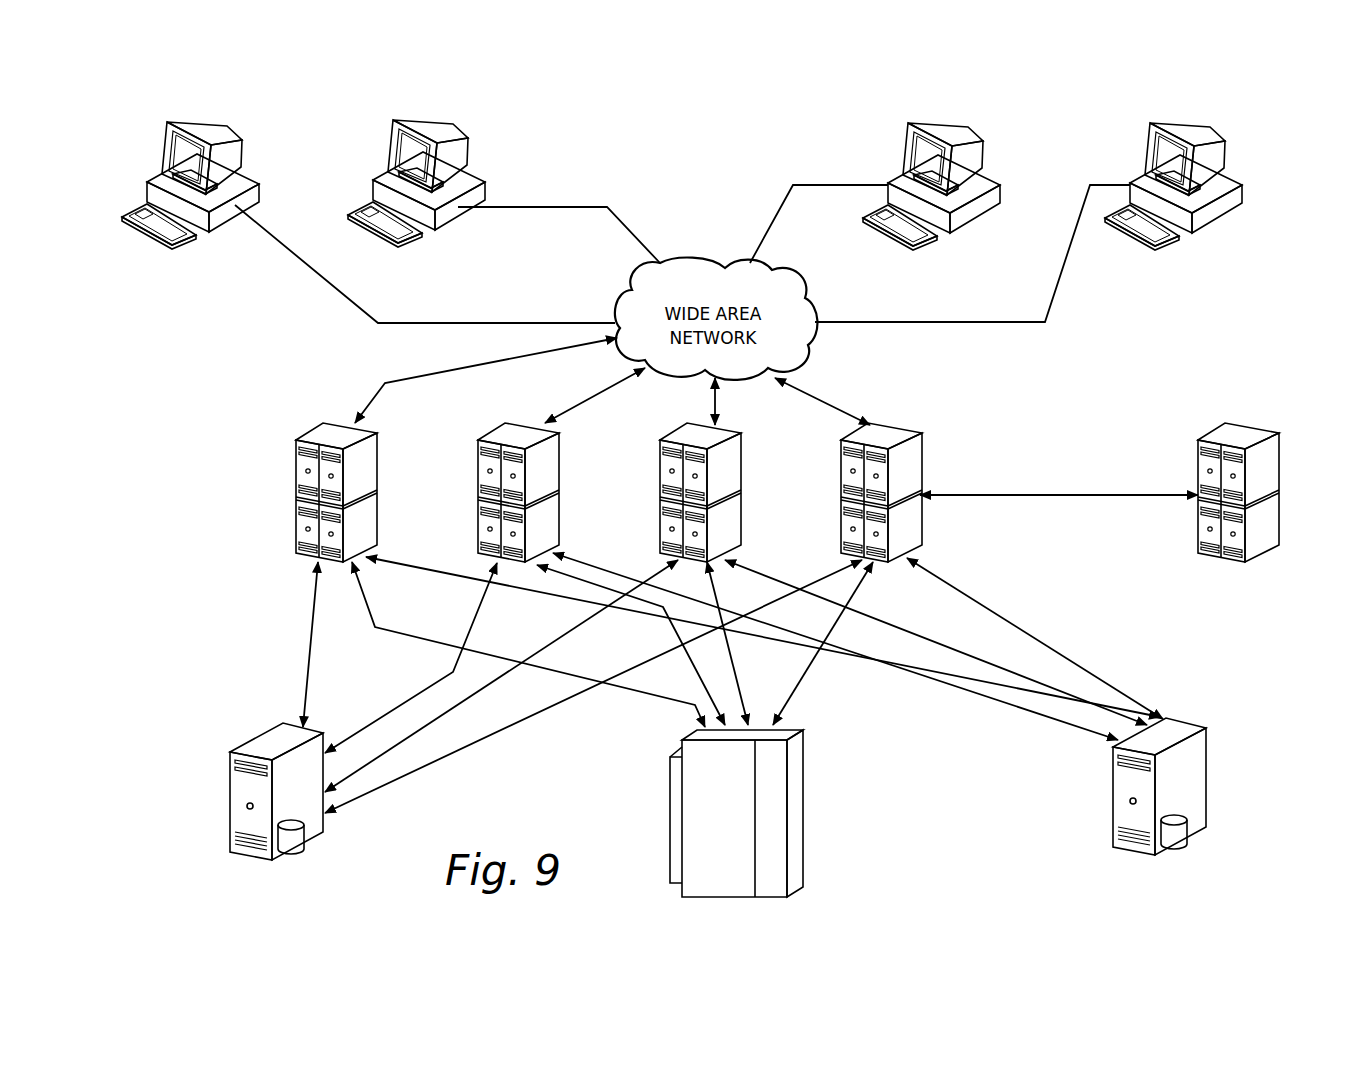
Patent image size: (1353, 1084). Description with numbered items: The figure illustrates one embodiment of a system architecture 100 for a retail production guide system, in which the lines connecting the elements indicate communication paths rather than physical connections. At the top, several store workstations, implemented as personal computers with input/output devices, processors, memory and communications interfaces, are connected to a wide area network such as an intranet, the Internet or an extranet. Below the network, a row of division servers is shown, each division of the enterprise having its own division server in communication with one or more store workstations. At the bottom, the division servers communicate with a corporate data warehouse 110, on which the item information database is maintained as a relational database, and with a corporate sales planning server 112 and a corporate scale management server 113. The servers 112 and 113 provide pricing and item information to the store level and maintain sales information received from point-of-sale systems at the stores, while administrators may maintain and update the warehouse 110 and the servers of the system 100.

The system architecture 100 is at (660, 178).
The corporate data warehouse 110 is at (795, 808).
The corporate sales planning server 112 is at (230, 800).
The corporate scale management server 113 is at (1198, 792).